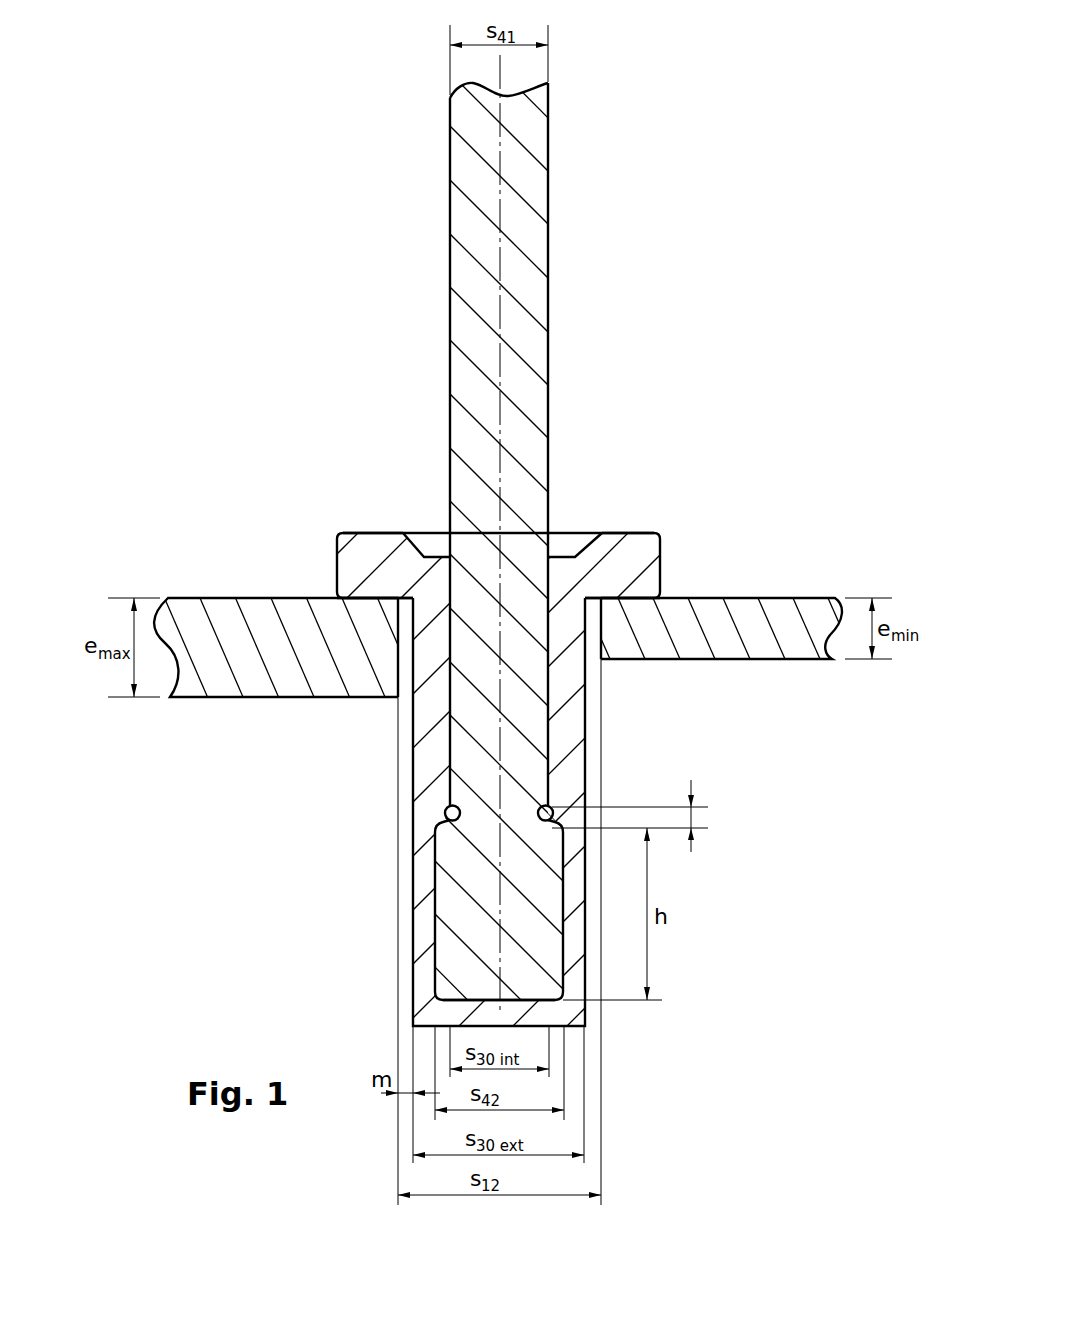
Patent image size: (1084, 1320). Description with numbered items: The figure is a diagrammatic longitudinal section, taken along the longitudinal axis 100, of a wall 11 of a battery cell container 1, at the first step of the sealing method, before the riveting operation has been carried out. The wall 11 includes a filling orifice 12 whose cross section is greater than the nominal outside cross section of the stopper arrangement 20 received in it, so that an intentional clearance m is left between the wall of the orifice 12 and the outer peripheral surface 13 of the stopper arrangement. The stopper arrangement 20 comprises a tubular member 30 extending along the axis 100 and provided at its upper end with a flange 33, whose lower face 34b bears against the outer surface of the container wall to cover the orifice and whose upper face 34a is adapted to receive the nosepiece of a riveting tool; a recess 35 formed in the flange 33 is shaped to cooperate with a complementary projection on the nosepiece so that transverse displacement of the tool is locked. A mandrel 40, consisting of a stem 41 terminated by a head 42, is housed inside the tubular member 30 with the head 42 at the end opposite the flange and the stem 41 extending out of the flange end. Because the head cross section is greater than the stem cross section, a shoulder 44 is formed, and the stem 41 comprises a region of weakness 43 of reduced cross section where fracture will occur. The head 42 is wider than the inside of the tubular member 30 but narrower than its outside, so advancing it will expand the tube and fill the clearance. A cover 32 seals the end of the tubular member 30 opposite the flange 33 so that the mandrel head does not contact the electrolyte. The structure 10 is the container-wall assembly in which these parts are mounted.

The container 1 is at (152, 470).
The structure with plates 10 is at (266, 753).
The wall 11 is at (226, 617).
The orifice 12 is at (403, 694).
The outer peripheral surface 13 is at (592, 664).
The stopper arrangement 20 is at (690, 486).
The tubular member 30 is at (572, 715).
The cover 32 is at (512, 1000).
The flange 33 is at (637, 560).
The upper face 34a is at (615, 533).
The lower face 34b is at (640, 602).
The recess 35 is at (427, 545).
The mandrel 40 is at (384, 280).
The stem 41 is at (530, 122).
The head 42 is at (462, 868).
The region of weakness 43 is at (692, 818).
The shoulder 44 is at (452, 826).
The longitudinal axis 100 is at (500, 70).